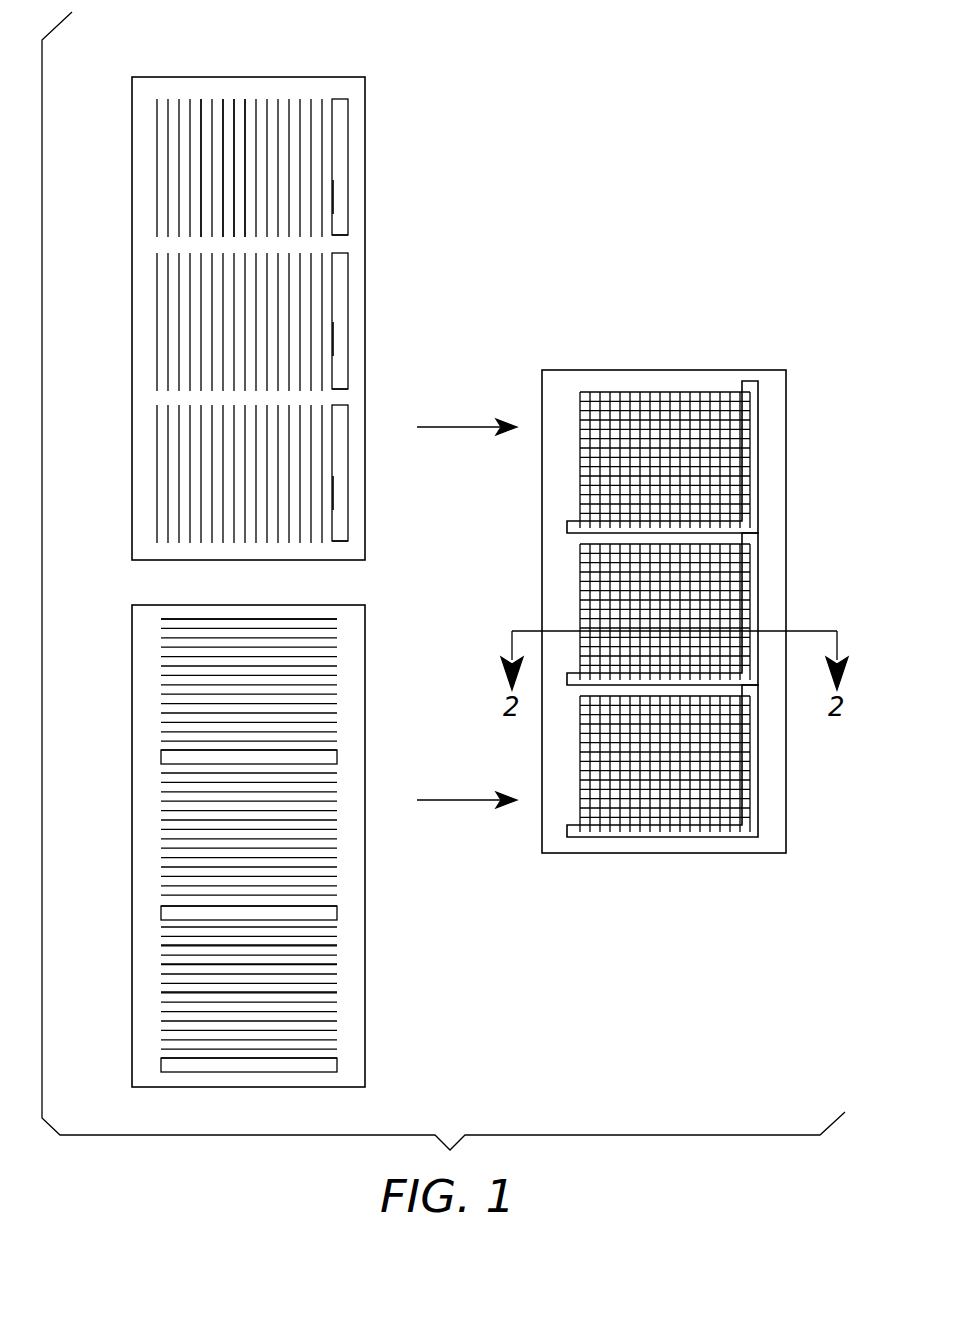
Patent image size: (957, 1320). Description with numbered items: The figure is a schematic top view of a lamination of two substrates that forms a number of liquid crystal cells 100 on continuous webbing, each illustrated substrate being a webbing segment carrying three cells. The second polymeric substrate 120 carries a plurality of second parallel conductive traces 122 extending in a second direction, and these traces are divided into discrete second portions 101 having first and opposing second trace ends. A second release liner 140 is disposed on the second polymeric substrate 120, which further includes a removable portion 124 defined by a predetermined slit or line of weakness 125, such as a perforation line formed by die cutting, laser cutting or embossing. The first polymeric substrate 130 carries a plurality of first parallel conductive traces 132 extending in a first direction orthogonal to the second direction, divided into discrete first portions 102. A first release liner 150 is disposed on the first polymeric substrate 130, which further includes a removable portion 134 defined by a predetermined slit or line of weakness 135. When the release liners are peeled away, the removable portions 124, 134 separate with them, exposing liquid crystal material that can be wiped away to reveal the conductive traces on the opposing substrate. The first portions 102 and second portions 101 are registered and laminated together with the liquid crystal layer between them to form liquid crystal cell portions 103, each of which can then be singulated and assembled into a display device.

The liquid crystal cell 100 is at (732, 329).
The discrete second portion 101 is at (123, 100).
The discrete first portion 102 is at (123, 620).
The liquid crystal cell portion 103 is at (793, 400).
The second polymeric substrate 120 is at (378, 96).
The second parallel conductive traces 122 is at (245, 100).
The removable portion 124 is at (383, 492).
The predetermined slit or line of weakness 125 is at (383, 523).
The first polymeric substrate 130 is at (376, 666).
The first parallel conductive traces 132 is at (330, 992).
The removable portion 134 is at (328, 1065).
The predetermined slit or line of weakness 135 is at (327, 1056).
The second release liner 140 is at (335, 92).
The first release liner 150 is at (350, 624).